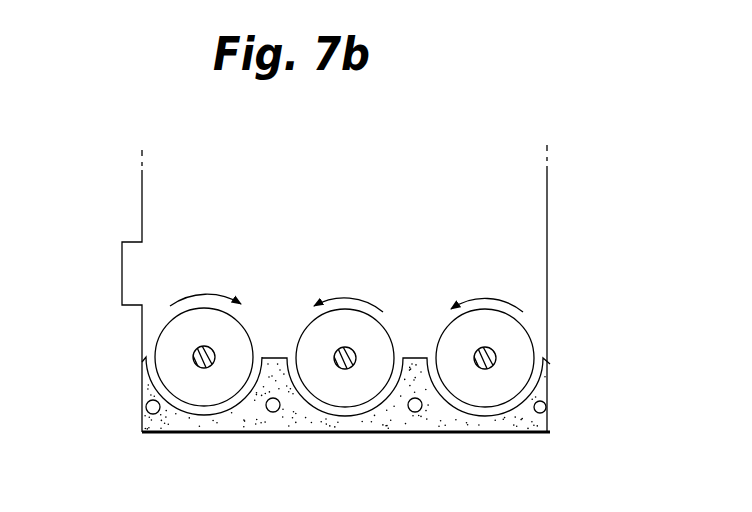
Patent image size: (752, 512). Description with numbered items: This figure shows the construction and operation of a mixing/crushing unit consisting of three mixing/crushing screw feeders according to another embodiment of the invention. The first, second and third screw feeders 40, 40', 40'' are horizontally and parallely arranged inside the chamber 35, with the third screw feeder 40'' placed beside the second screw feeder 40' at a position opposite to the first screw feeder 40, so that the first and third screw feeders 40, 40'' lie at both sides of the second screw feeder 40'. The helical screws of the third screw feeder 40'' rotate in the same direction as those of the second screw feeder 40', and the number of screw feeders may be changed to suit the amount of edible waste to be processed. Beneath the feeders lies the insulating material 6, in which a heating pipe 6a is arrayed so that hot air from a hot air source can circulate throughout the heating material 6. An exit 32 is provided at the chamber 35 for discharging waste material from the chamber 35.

The exit 32 is at (132, 240).
The chamber 35 is at (528, 266).
The insulating material 6 is at (257, 420).
The heating pipe 6a is at (528, 415).
The first screw feeder 40 is at (221, 329).
The second screw feeder 40' is at (347, 327).
The third screw feeder 40'' is at (485, 327).